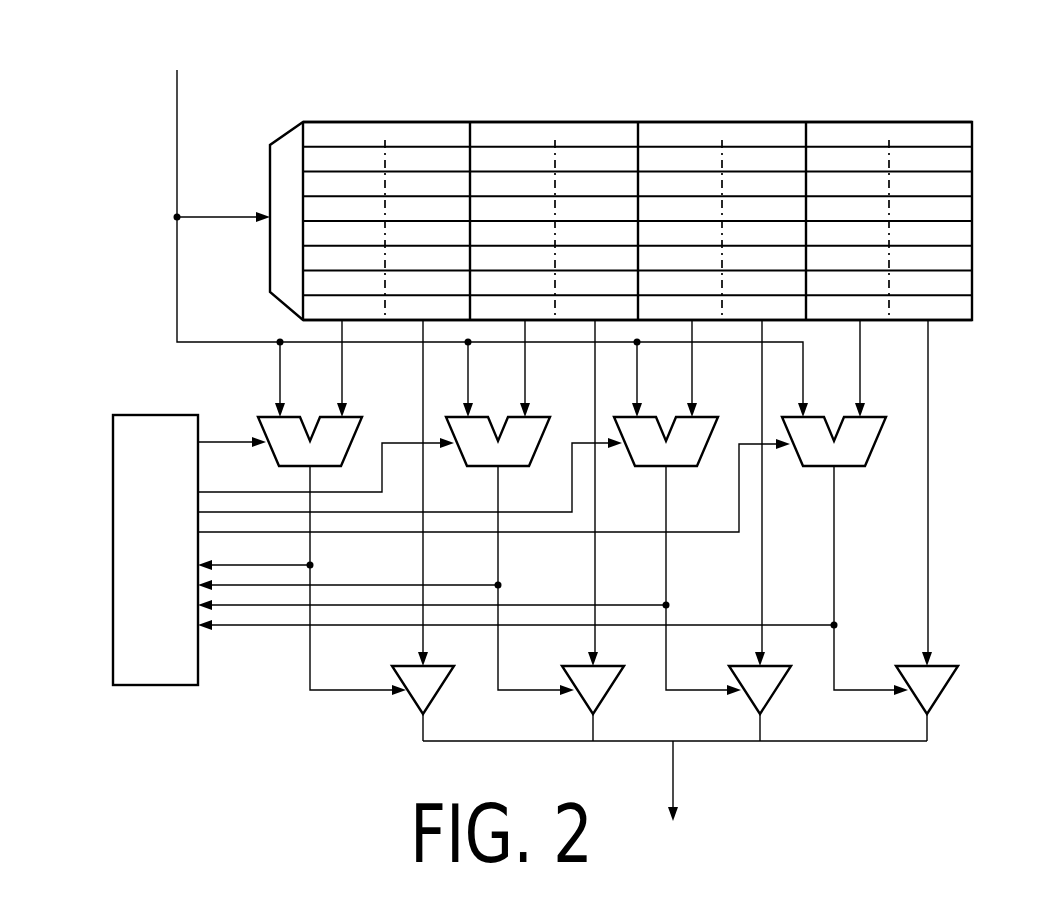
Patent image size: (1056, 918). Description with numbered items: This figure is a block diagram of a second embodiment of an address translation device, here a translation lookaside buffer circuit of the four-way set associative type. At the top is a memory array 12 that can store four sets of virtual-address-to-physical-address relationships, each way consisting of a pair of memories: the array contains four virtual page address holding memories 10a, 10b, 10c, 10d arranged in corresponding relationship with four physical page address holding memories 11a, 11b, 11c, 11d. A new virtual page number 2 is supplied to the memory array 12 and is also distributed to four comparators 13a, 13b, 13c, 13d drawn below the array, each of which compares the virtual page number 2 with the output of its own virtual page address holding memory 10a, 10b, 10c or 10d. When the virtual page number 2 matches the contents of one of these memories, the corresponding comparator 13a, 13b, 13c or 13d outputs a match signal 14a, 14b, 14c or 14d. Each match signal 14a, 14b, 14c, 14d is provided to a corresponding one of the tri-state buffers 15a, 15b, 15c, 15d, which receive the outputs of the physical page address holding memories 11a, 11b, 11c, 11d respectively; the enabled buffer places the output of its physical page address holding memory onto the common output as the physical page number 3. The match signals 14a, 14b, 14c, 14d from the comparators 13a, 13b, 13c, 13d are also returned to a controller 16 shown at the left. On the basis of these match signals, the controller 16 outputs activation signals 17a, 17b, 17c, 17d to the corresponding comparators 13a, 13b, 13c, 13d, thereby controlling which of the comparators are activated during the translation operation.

The virtual page number 2 is at (177, 97).
The physical page number 3 is at (673, 769).
The virtual page address holding memory 10a is at (331, 118).
The virtual page address holding memory 10b is at (510, 120).
The virtual page address holding memory 10c is at (678, 120).
The virtual page address holding memory 10d is at (847, 120).
The physical page address holding memory 11a is at (416, 120).
The physical page address holding memory 11b is at (598, 120).
The physical page address holding memory 11c is at (763, 120).
The physical page address holding memory 11d is at (932, 120).
The memory array 12 is at (960, 321).
The comparator 13a is at (352, 424).
The comparator 13b is at (540, 425).
The comparator 13c is at (705, 425).
The comparator 13d is at (875, 425).
The match signal 14a is at (330, 697).
The match signal 14b is at (515, 692).
The match signal 14c is at (688, 692).
The match signal 14d is at (857, 692).
The tri-state buffer 15a is at (415, 703).
The tri-state buffer 15b is at (590, 697).
The tri-state buffer 15c is at (767, 700).
The tri-state buffer 15d is at (933, 700).
The controller 16 is at (143, 686).
The activation signal 17a is at (219, 440).
The activation signal 17b is at (252, 491).
The activation signal 17c is at (546, 511).
The activation signal 17d is at (739, 517).